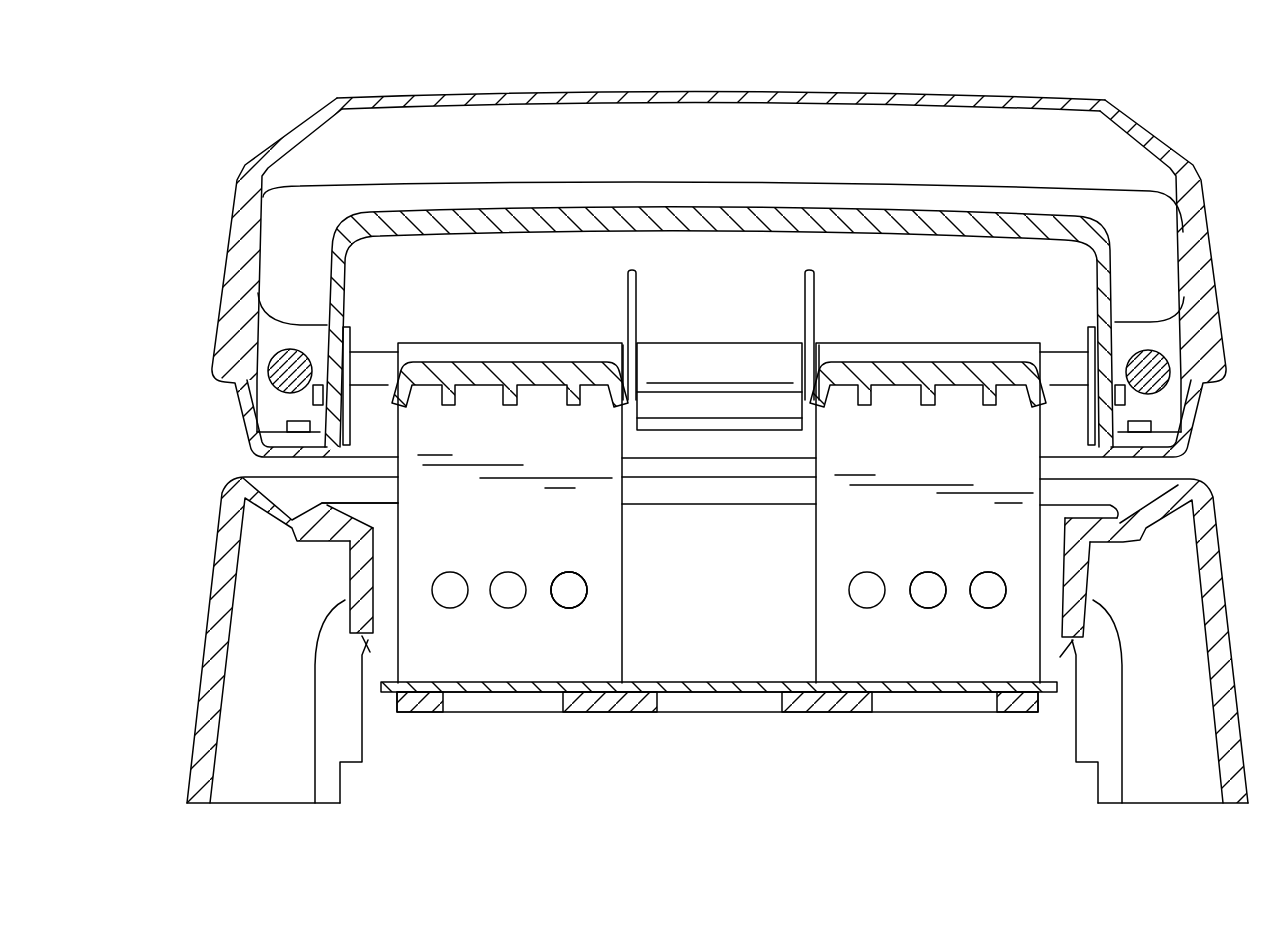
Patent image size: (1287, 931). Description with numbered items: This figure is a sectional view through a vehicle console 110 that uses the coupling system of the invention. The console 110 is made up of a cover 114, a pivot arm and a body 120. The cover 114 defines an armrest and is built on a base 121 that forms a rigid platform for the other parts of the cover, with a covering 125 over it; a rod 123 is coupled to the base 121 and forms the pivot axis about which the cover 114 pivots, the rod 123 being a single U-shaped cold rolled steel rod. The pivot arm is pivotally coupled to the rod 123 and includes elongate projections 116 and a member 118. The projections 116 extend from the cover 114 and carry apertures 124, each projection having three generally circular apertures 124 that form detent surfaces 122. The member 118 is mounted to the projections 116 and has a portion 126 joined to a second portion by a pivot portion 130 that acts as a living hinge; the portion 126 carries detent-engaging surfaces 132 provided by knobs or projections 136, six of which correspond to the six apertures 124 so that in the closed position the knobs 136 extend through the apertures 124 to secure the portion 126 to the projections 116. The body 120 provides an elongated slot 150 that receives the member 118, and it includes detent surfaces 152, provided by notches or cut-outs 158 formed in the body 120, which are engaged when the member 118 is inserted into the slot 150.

The vehicle console 110 is at (238, 102).
The cover 114 is at (977, 90).
The projections 116 is at (474, 660).
The member 118 is at (699, 632).
The body 120 is at (1218, 523).
The base 121 is at (1061, 228).
The detent surfaces 122 is at (562, 608).
The rod 123 is at (1158, 392).
The apertures 124 is at (590, 587).
The covering 125 is at (1005, 97).
The portion 126 is at (788, 657).
The pivot portion 130 is at (752, 688).
The detent-engaging surfaces 132 is at (988, 608).
The knobs or projections 136 is at (570, 590).
The elongated slot 150 is at (1093, 567).
The detent surfaces 152 is at (357, 622).
The notches or cut-outs 158 is at (365, 651).